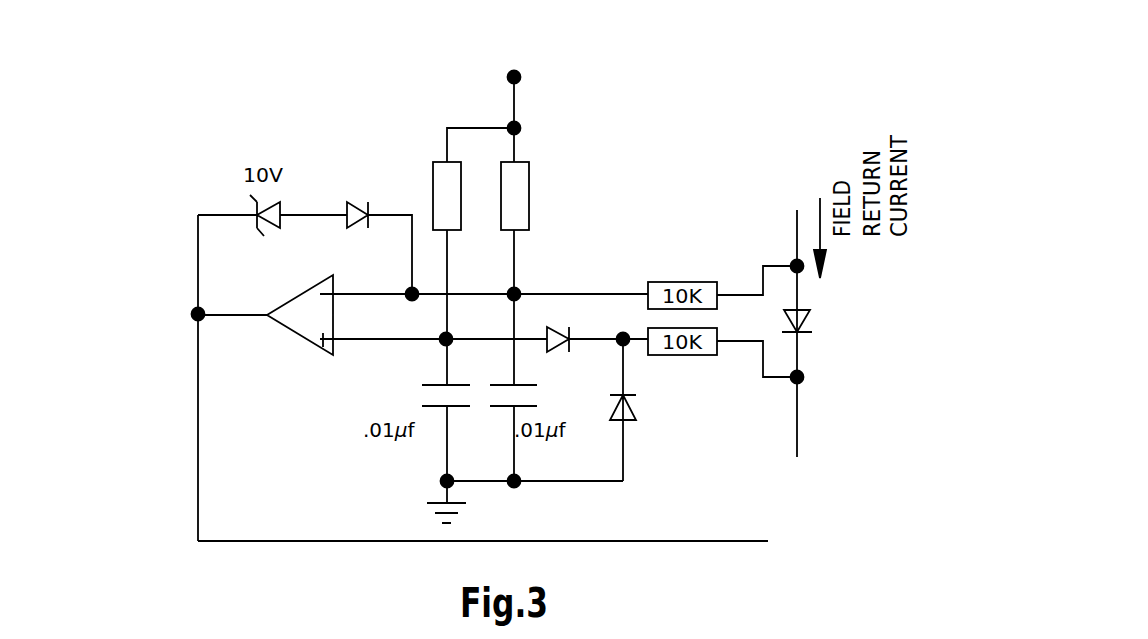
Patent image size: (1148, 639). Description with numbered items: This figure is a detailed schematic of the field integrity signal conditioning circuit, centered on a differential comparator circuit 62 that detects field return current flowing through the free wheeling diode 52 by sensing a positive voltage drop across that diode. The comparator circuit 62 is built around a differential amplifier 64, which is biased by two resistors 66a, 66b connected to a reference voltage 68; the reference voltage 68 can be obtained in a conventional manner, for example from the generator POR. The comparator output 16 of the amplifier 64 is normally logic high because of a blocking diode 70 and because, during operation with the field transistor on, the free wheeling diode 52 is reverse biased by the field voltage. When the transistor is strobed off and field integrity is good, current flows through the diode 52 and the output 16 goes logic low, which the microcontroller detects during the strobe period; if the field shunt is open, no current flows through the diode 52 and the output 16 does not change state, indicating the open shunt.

The comparator output 16 is at (198, 314).
The free wheeling diode 52 is at (805, 320).
The differential comparator circuit 62 is at (175, 529).
The differential amplifier 64 is at (297, 337).
The resistor 66a is at (433, 205).
The resistor 66b is at (529, 226).
The reference voltage 68 is at (514, 77).
The blocking diode 70 is at (556, 348).